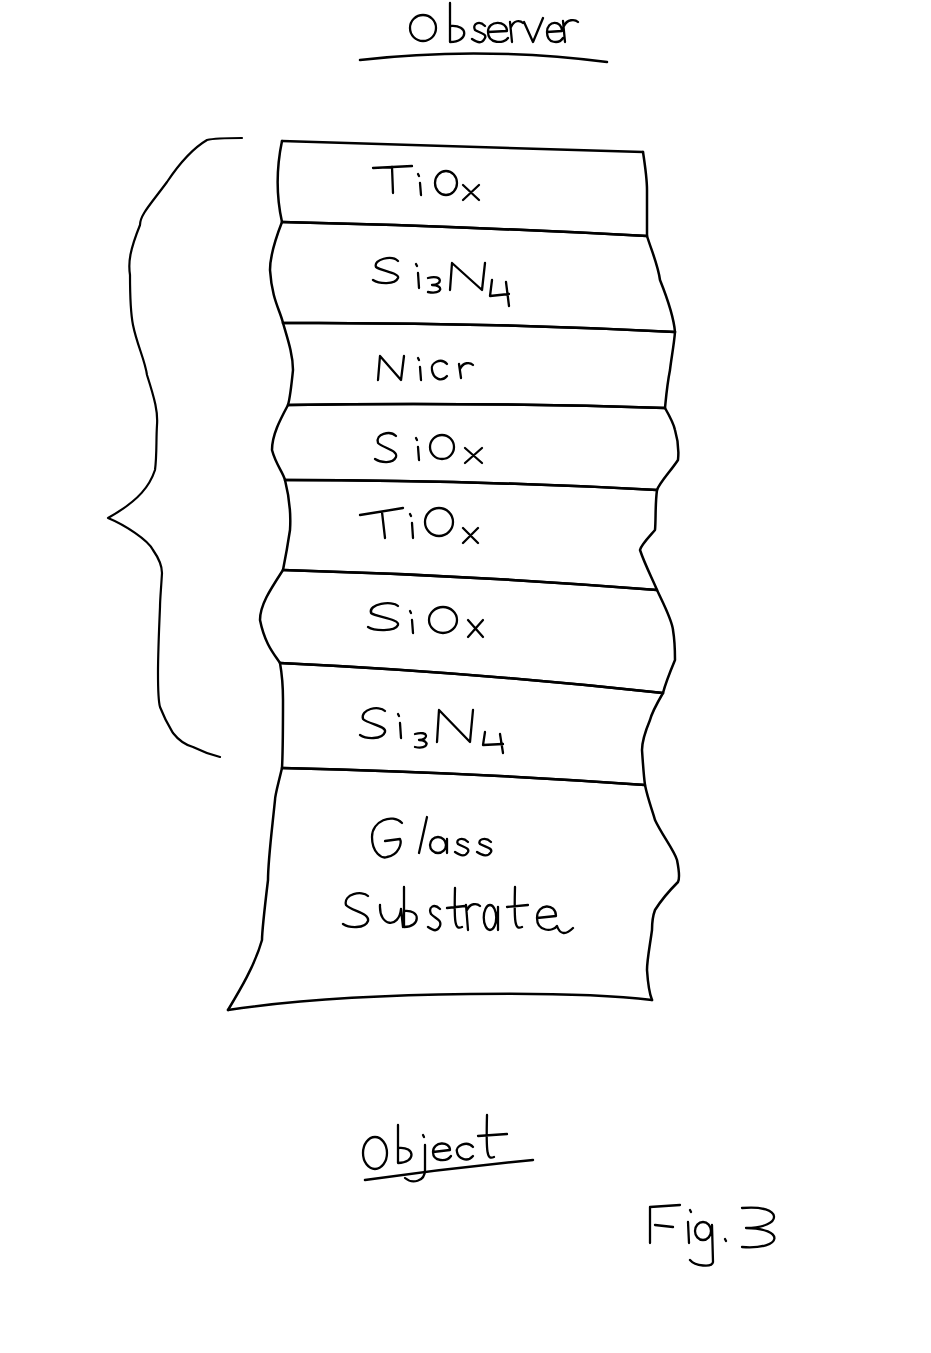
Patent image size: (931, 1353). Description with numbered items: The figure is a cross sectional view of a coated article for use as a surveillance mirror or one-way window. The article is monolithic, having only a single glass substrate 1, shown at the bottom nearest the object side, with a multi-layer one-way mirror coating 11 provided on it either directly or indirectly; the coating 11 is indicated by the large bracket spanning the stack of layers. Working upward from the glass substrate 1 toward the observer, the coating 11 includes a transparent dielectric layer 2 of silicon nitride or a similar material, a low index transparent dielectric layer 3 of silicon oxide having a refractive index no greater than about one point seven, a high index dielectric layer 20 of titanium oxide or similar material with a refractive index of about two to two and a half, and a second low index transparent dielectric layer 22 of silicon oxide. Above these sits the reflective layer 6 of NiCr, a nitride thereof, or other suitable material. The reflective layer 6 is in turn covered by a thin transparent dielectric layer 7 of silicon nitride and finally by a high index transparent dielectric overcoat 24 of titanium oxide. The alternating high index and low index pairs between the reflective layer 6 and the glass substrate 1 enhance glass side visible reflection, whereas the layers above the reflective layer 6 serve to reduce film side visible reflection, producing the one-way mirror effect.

The glass substrate 1 is at (620, 920).
The transparent dielectric layer 2 is at (627, 740).
The low index transparent dielectric layer 3 is at (648, 645).
The high index dielectric layer 20 is at (603, 552).
The low index transparent dielectric layer 22 is at (817, 465).
The reflective layer 6 is at (633, 383).
The transparent dielectric layer 7 is at (640, 295).
The high index transparent dielectric overcoat 24 is at (620, 207).
The multi-layer one-way mirror coating 11 is at (53, 667).